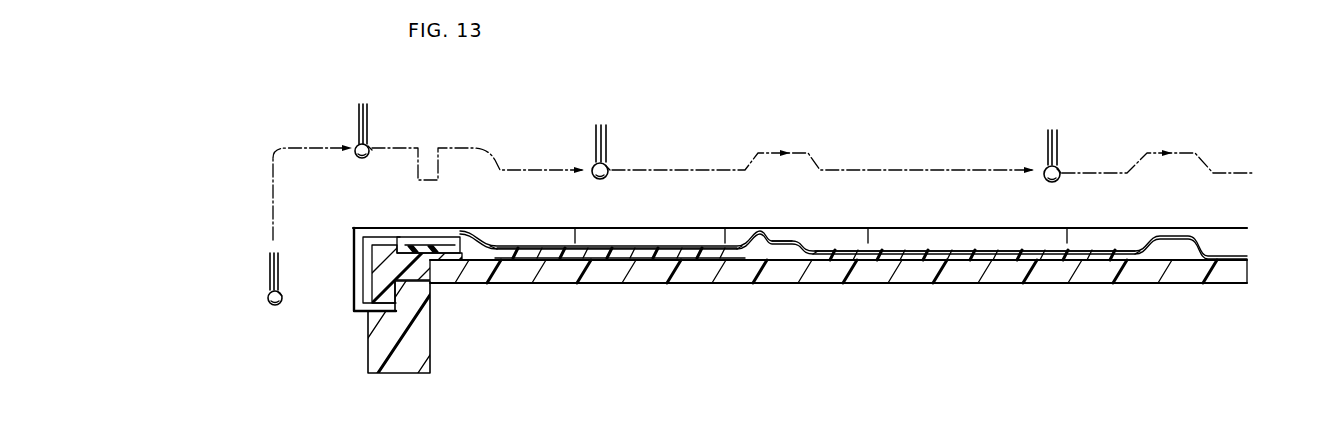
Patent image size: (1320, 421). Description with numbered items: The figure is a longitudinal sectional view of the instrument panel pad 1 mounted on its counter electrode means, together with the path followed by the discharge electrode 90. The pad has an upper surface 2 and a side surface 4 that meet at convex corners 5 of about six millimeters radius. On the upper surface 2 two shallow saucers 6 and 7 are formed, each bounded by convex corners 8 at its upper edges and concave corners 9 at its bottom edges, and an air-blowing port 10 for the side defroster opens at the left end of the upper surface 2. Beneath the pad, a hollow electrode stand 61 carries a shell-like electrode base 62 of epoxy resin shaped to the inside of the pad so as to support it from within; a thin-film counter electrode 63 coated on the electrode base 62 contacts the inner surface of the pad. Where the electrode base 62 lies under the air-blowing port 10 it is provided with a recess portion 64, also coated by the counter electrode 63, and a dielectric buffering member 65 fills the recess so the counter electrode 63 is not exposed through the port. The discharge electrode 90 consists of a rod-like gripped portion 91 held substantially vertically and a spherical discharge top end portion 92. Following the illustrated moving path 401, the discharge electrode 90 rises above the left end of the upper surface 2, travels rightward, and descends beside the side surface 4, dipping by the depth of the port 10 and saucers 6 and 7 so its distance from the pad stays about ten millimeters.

The instrument panel pad 1 is at (549, 227).
The upper surface 2 is at (771, 238).
The side surface 4 is at (353, 253).
The convex corners 5 is at (354, 226).
The shallow saucer 6 is at (608, 245).
The shallow saucer 7 is at (948, 251).
The convex corners 8 is at (471, 229).
The concave corners 9 is at (497, 245).
The air-blowing port 10 is at (441, 236).
The electrode stand 61 is at (367, 336).
The electrode base 62 is at (684, 275).
The counter electrode 63 is at (740, 258).
The recess portions 64 is at (410, 236).
The buffering member 65 is at (432, 238).
The discharge electrode 90 is at (357, 143).
The gripped portion 91 is at (368, 106).
The discharge top end portion 92 is at (369, 144).
The assembly 401 is at (271, 344).